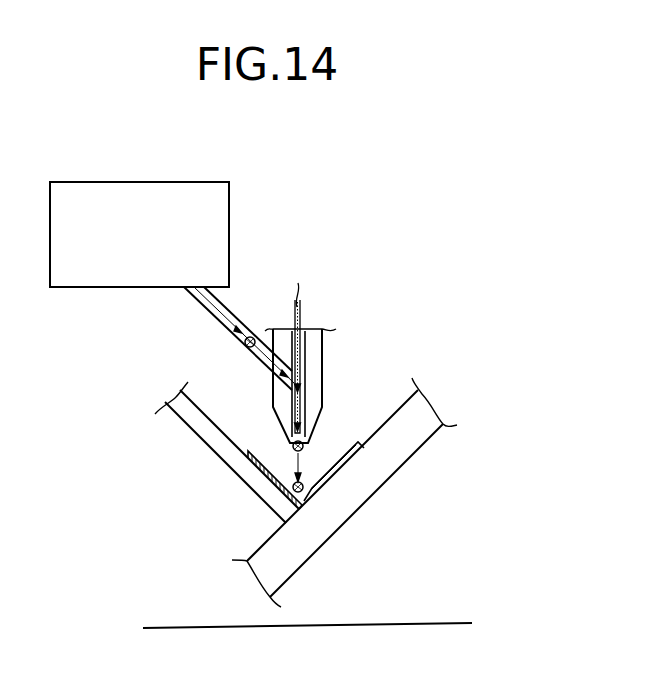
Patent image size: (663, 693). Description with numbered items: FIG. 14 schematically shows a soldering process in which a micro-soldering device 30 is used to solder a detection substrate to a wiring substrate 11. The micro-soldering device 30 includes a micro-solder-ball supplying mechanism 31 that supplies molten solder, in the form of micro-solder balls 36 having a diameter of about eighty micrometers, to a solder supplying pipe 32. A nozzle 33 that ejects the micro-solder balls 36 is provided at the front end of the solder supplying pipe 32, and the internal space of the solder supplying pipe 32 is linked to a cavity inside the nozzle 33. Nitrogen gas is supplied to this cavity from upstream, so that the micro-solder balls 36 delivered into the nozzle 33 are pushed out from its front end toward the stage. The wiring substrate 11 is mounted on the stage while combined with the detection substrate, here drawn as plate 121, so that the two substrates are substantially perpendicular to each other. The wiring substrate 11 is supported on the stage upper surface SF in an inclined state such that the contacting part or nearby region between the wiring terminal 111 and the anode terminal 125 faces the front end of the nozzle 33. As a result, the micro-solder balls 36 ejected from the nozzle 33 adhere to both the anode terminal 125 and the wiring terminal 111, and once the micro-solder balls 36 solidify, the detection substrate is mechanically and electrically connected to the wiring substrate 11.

The micro-soldering device 30 is at (292, 187).
The micro-solder-ball supplying mechanism 31 is at (139, 182).
The solder supplying pipe 32 is at (214, 318).
The nozzle 33 is at (324, 357).
The micro-solder ball 36 is at (249, 348).
The wiring substrate 11 is at (414, 438).
The wiring terminal 111 is at (338, 470).
The plate 121 is at (205, 436).
The anode terminal 125 is at (252, 492).
The stage upper surface SF is at (459, 623).